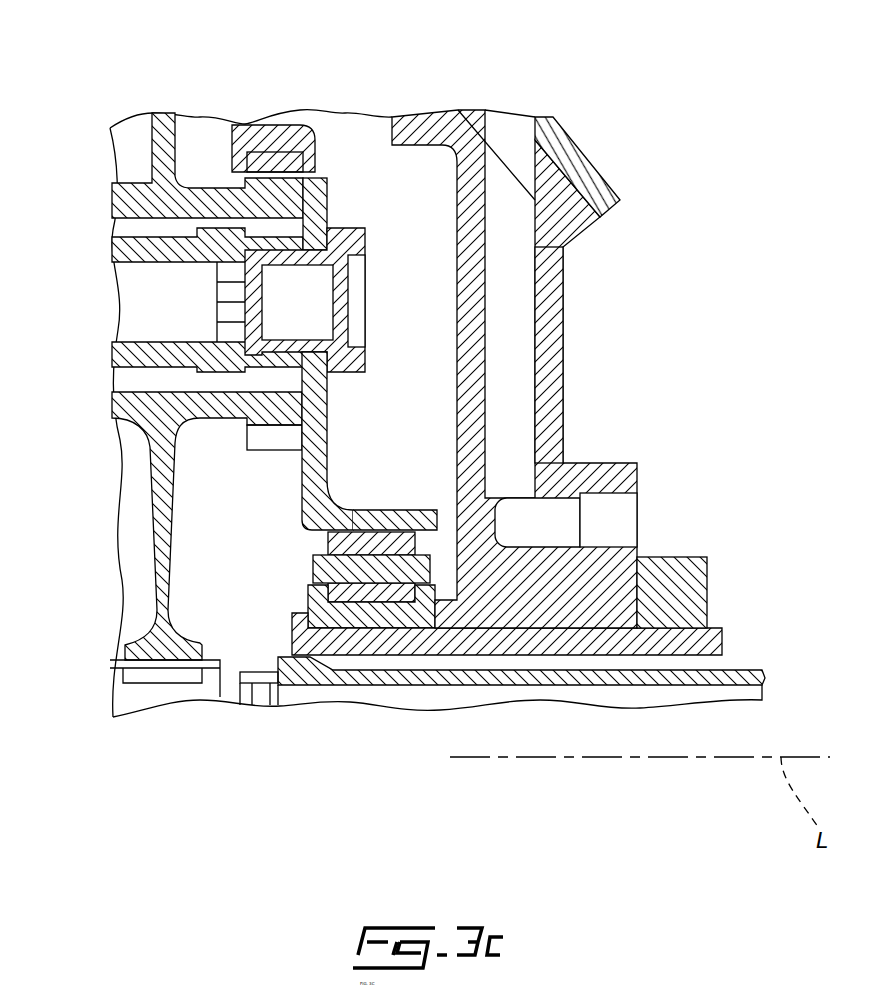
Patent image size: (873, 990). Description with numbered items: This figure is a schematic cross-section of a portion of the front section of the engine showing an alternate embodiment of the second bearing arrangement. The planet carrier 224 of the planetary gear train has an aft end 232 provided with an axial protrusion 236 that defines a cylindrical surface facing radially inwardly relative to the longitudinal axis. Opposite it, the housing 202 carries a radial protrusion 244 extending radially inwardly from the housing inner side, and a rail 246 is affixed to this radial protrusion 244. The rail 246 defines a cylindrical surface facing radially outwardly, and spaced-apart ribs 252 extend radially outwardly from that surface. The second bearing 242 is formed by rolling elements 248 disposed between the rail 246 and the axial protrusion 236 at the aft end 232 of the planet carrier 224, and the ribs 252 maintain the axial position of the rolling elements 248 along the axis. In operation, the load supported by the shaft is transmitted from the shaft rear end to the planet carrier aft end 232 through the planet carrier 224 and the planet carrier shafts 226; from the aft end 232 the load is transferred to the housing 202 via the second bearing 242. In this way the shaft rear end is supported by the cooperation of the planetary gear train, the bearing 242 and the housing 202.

The housing 202 is at (577, 150).
The planet carrier 224 is at (332, 213).
The planet carrier shafts 226 is at (378, 298).
The aft end of the planet carrier 232 is at (352, 490).
The axial protrusion 236 is at (408, 508).
The second bearing 242 is at (300, 555).
The radial protrusion 244 is at (565, 372).
The rail 246 is at (356, 642).
The rolling elements 248 is at (313, 570).
The spaced-apart ribs 252 is at (296, 612).